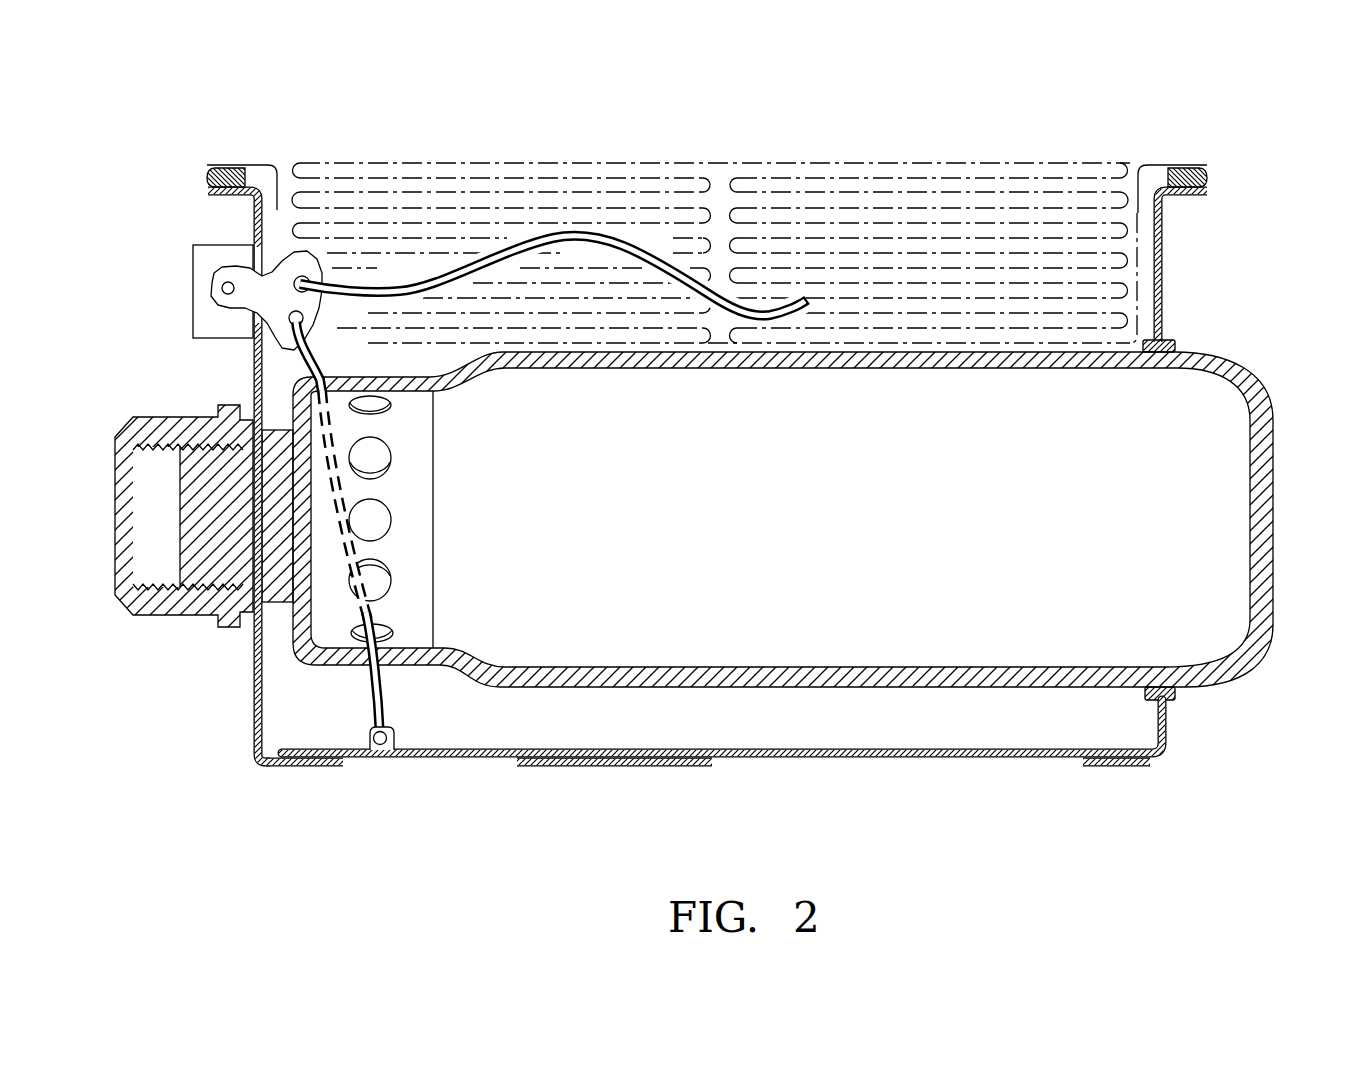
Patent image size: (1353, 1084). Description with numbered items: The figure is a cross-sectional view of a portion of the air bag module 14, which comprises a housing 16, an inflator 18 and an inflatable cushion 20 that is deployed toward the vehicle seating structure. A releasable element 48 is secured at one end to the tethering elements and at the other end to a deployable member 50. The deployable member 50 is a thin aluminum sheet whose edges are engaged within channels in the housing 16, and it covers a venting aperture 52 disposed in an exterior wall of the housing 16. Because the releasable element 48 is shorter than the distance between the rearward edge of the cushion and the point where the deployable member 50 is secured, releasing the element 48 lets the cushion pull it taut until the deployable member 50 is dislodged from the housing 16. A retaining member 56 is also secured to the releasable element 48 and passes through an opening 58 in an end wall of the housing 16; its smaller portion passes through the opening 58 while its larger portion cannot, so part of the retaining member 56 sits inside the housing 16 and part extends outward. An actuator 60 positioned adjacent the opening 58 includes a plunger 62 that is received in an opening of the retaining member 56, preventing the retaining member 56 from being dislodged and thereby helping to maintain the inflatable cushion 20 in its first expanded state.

The air bag module 14 is at (1226, 142).
The housing 16 is at (718, 518).
The inflator 18 is at (1232, 362).
The inflatable cushion 20 is at (1045, 160).
The releasable element 48 is at (547, 233).
The deployable member 50 is at (887, 760).
The venting aperture 52 is at (343, 766).
The retaining member 56 is at (253, 273).
The opening 58 is at (250, 322).
The actuator 60 is at (193, 273).
The plunger 62 is at (220, 290).